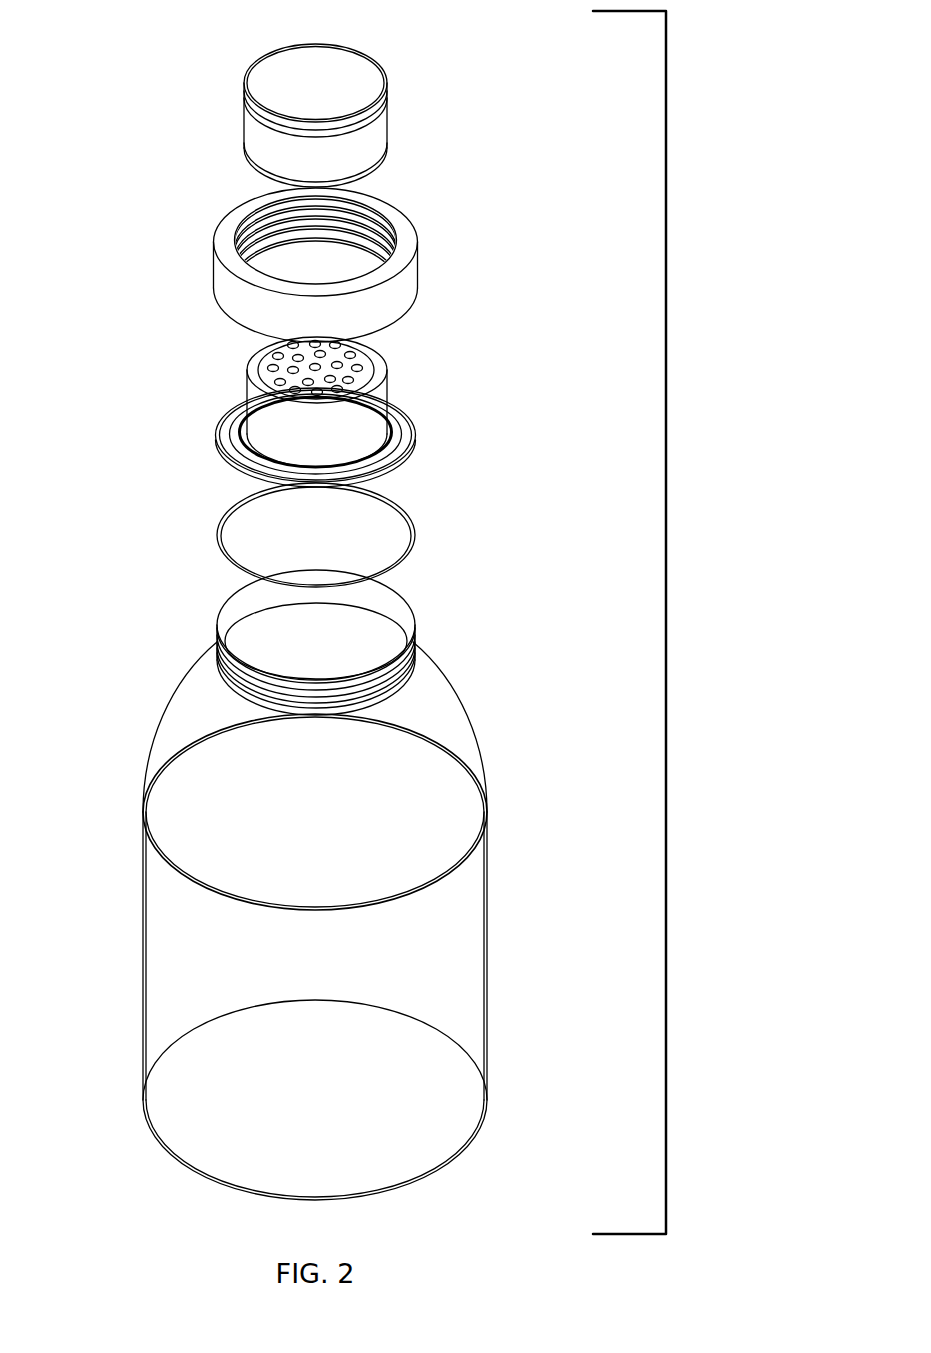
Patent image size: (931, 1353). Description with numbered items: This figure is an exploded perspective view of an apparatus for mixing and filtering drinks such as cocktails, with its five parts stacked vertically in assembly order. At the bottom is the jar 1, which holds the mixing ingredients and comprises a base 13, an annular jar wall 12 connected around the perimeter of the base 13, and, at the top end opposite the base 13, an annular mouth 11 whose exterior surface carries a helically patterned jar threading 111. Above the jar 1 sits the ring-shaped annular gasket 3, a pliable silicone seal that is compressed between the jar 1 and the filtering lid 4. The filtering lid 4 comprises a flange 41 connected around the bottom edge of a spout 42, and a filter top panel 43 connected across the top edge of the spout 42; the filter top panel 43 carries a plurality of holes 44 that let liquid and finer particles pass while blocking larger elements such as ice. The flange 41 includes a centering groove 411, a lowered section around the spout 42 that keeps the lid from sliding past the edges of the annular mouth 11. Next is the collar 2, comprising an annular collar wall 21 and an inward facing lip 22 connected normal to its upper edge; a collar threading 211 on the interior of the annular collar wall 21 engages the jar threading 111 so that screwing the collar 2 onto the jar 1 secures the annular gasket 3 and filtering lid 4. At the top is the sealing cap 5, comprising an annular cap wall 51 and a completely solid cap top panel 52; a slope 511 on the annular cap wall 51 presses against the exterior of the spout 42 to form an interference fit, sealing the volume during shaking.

The jar 1 is at (255, 894).
The annular mouth 11 is at (230, 607).
The jar threading 111 is at (222, 645).
The annular jar wall 12 is at (143, 1030).
The base 13 is at (205, 1150).
The collar 2 is at (314, 249).
The annular collar wall 21 is at (402, 282).
The collar threading 211 is at (258, 215).
The lip 22 is at (407, 222).
The annular gasket 3 is at (413, 518).
The filtering lid 4 is at (316, 402).
The flange 41 is at (218, 438).
The centering groove 411 is at (240, 415).
The spout 42 is at (375, 413).
The filter top panel 43 is at (265, 362).
The plurality of holes 44 is at (357, 355).
The sealing cap 5 is at (309, 93).
The annular cap wall 51 is at (360, 143).
The slope 511 is at (245, 120).
The cap top panel 52 is at (347, 67).